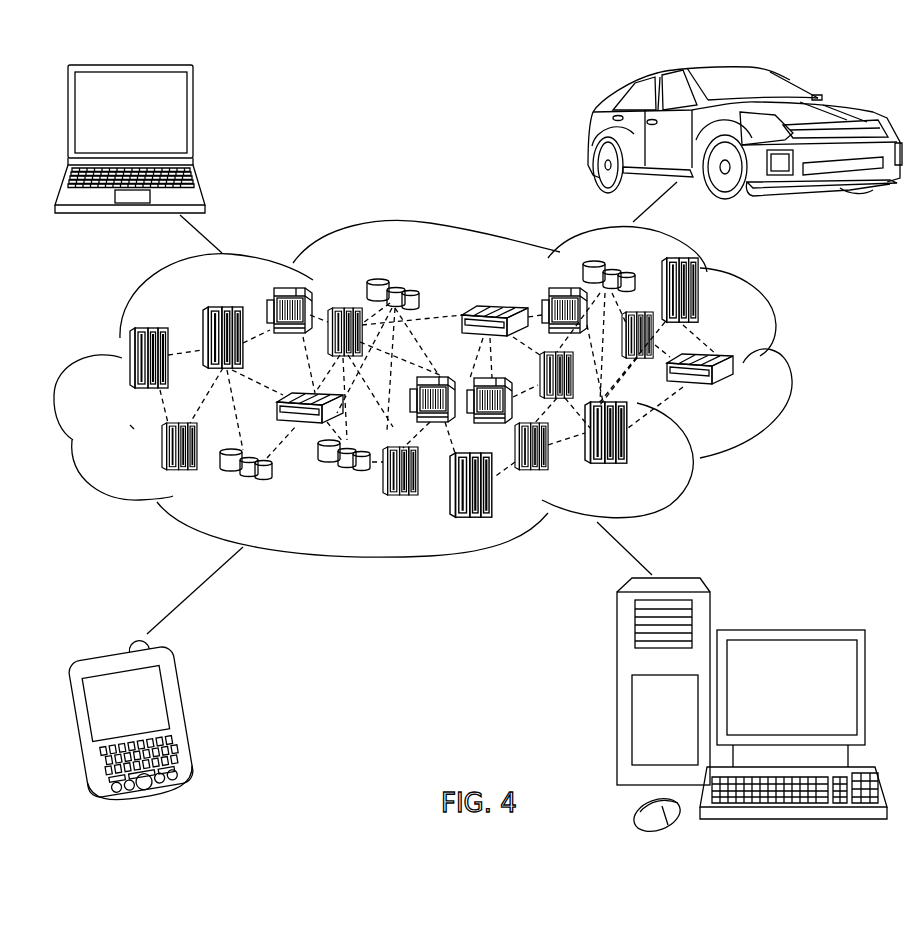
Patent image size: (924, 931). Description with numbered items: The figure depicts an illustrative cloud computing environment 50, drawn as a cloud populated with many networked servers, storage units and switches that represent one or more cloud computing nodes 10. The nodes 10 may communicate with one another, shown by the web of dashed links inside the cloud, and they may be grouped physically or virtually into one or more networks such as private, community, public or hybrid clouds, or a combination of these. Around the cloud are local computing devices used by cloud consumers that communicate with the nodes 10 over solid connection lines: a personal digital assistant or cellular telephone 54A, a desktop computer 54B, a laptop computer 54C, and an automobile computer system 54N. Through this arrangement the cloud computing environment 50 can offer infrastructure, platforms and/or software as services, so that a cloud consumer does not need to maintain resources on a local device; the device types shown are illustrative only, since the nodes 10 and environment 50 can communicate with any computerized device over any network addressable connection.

The cloud computing node 10 is at (737, 397).
The cloud computing environment 50 is at (449, 388).
The personal digital assistant or cellular telephone 54A is at (185, 716).
The desktop computer 54B is at (790, 630).
The laptop computer 54C is at (193, 121).
The automobile computer system 54N is at (592, 133).